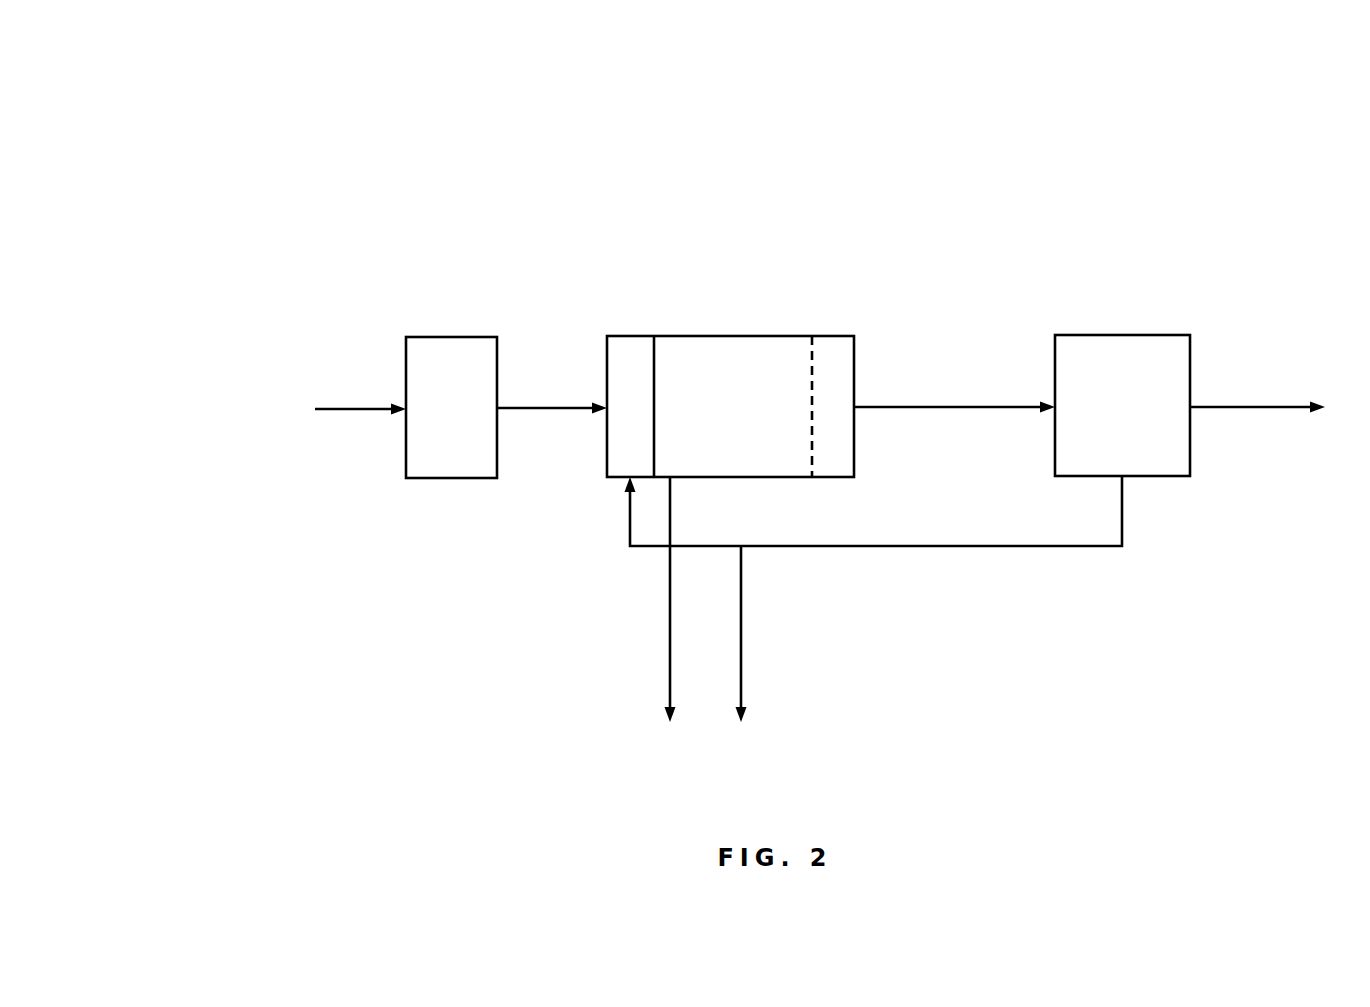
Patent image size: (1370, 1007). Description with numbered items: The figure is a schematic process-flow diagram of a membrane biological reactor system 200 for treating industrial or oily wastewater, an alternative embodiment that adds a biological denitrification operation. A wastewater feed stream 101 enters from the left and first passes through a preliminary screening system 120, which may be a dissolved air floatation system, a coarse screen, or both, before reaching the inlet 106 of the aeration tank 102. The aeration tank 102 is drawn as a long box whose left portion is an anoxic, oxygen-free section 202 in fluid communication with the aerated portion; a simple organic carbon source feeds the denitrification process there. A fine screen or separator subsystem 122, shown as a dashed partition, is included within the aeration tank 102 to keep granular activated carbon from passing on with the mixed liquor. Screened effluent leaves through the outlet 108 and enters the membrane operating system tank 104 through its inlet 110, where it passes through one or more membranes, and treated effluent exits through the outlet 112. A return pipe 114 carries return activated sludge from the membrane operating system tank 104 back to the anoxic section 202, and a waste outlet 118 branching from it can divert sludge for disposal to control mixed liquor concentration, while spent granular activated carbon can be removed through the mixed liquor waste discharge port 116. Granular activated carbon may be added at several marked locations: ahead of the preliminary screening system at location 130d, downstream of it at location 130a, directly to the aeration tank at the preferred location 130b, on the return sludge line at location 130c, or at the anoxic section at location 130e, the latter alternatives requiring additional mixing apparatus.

The membrane biological reactor system 200 is at (152, 99).
The feed stream 101 is at (337, 413).
The aeration tank 102 is at (691, 268).
The membrane operating system tank 104 is at (1116, 296).
The inlet 106 is at (578, 415).
The outlet 108 is at (868, 407).
The inlet 110 is at (1030, 405).
The outlet 112 is at (1257, 407).
The return pipe 114 is at (1033, 547).
The mixed liquor waste discharge port 116 is at (672, 649).
The waste outlet 118 is at (743, 672).
The preliminary screening system 120 is at (427, 485).
The fine screen or separator subsystem 122 is at (814, 355).
The anoxic section 202 is at (630, 340).
The location 130a is at (522, 408).
The location 130b is at (748, 336).
The location 130c is at (832, 547).
The location 130d is at (348, 409).
The location 130e is at (605, 458).